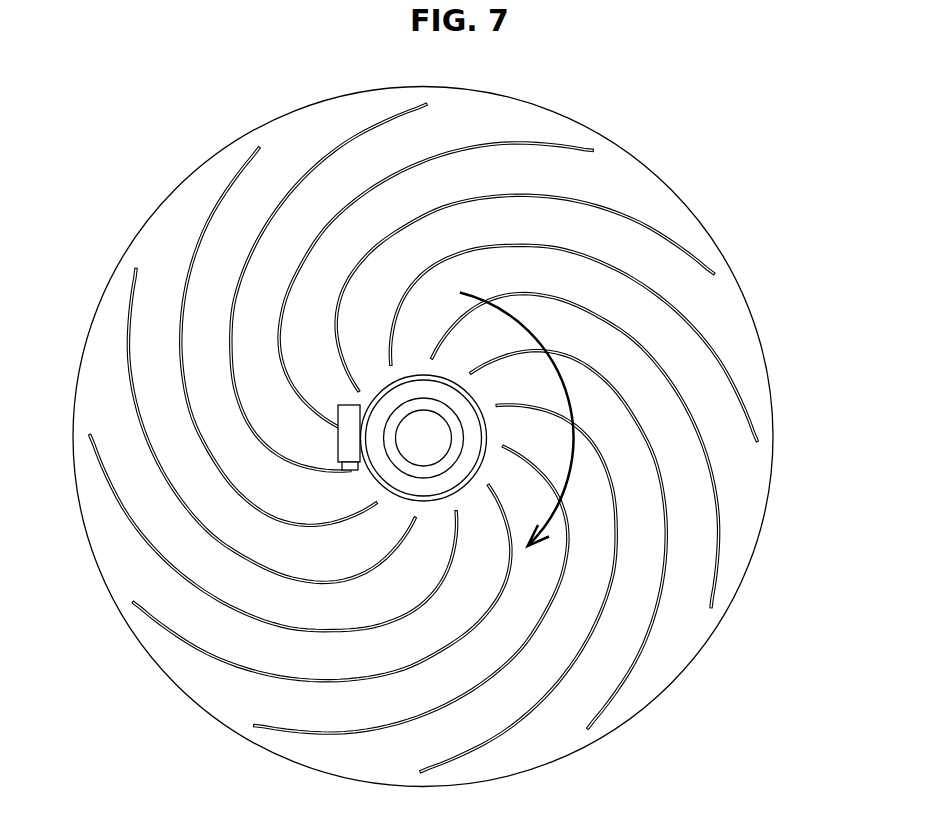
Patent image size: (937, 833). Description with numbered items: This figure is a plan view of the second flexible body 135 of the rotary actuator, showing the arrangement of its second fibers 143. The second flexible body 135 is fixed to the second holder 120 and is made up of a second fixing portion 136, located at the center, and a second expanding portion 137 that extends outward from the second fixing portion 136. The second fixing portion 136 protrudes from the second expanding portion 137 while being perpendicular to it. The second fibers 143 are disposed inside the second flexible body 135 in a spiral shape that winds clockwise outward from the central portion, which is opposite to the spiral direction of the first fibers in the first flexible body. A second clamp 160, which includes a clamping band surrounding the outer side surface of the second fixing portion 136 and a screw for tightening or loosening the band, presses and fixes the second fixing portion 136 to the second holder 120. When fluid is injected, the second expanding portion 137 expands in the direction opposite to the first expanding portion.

The second holder 120 is at (453, 458).
The second flexible body 135 is at (461, 438).
The second fixing portion 136 is at (493, 422).
The second expanding portion 137 is at (432, 438).
The second fibers 143 is at (635, 217).
The second clamp 160 is at (328, 440).